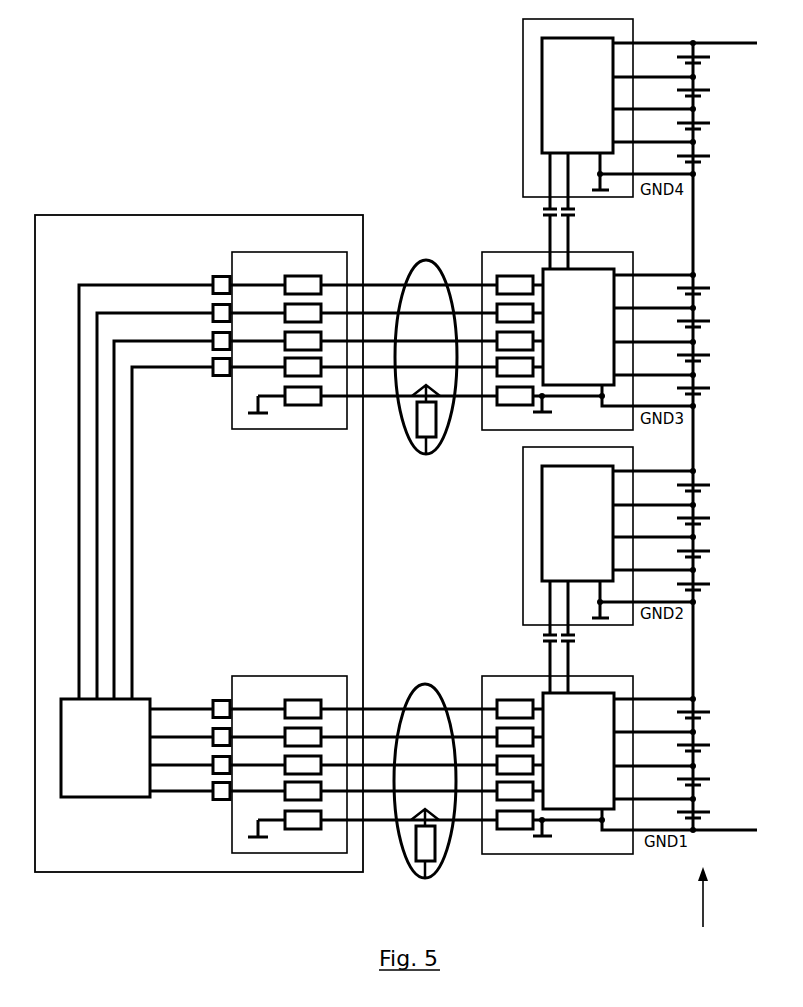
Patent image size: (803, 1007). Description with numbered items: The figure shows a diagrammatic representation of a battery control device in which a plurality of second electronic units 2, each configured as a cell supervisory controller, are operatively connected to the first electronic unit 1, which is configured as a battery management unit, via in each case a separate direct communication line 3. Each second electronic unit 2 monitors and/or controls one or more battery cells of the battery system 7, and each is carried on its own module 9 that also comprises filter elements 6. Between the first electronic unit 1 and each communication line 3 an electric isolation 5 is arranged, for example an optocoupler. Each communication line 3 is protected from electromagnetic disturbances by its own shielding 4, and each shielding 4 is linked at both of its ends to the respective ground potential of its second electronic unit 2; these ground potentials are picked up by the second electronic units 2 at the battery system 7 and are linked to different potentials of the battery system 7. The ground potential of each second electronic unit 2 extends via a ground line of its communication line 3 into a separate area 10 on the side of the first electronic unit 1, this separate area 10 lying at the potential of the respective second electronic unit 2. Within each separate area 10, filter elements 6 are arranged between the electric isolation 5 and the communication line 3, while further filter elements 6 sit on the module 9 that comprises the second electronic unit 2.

The first electronic unit 1 is at (105, 748).
The second electronic unit 2 is at (578, 423).
The communication line 3 is at (375, 312).
The shielding 4 is at (437, 264).
The electric isolation 5 is at (223, 372).
The filter elements 6 is at (304, 399).
The battery system 7 is at (702, 911).
The module 9 is at (507, 260).
The separate area 10 is at (275, 419).